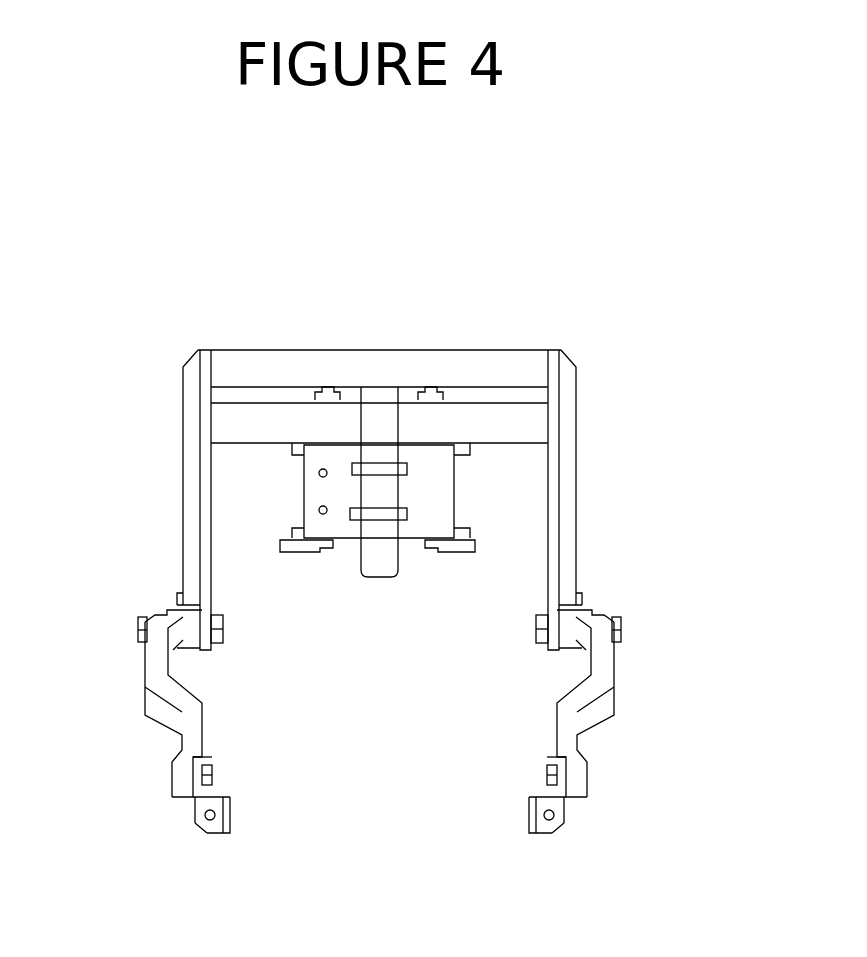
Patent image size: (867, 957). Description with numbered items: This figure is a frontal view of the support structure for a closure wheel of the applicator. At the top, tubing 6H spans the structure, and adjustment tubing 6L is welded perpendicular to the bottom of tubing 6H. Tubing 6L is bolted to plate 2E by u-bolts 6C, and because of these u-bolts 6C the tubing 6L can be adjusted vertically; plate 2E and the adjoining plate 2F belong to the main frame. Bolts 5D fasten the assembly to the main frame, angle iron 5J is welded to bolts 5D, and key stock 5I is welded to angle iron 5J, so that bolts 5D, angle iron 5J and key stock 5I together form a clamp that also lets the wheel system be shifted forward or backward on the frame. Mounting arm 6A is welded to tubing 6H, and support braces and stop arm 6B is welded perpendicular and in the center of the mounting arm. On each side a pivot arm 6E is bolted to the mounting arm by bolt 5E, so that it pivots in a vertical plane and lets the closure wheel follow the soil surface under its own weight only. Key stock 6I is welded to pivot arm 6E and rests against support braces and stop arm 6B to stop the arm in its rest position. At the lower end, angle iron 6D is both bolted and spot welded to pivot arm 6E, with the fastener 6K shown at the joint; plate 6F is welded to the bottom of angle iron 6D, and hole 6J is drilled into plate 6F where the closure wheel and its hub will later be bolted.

The support braces and stop arm 6B is at (158, 383).
The mounting arm 6A is at (208, 347).
The tubing 6H is at (340, 337).
The bolts 5D is at (335, 384).
The key stock 5I is at (280, 450).
The plate with holes 2F is at (306, 508).
The plate 2E is at (458, 468).
The u-bolts 6C is at (413, 483).
The adjustment tubing 6L is at (404, 579).
The angle iron 5J is at (301, 561).
The key stock 6I is at (165, 594).
The bolt 5E is at (133, 628).
The pivot arm 6E is at (132, 679).
The bolt bracket 6K is at (524, 771).
The angle iron 6D is at (512, 799).
The plate 6F is at (192, 834).
The hole 6J is at (212, 835).